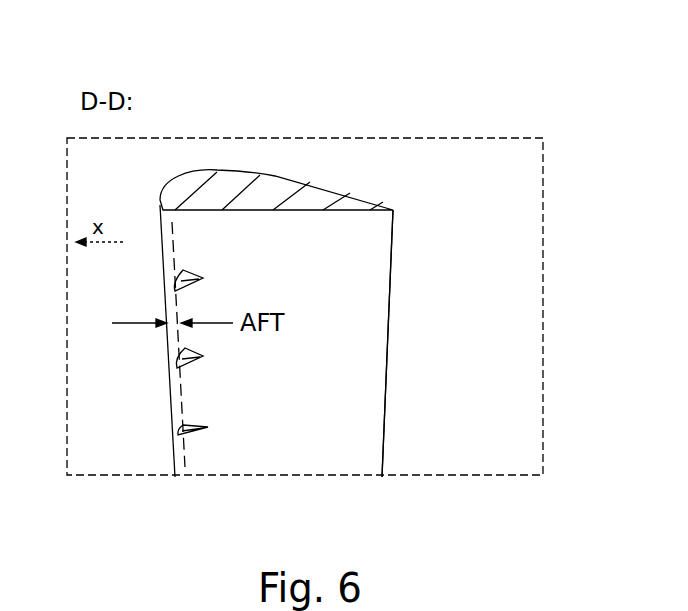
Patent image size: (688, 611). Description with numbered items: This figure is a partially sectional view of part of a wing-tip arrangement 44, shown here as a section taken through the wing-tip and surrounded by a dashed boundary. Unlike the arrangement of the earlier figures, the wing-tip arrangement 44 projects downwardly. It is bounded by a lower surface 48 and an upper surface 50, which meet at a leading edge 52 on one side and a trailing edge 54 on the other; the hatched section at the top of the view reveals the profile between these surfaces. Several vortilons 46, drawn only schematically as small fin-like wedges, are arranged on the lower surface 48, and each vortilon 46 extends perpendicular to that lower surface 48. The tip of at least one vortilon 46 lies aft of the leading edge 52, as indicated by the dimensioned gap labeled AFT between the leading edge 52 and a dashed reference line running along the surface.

The wing-tip arrangement 44 is at (345, 120).
The vortilon 46 is at (203, 278).
The lower surface 48 is at (362, 338).
The upper surface 50 is at (343, 185).
The leading edge 52 is at (170, 412).
The trailing edge 54 is at (395, 273).